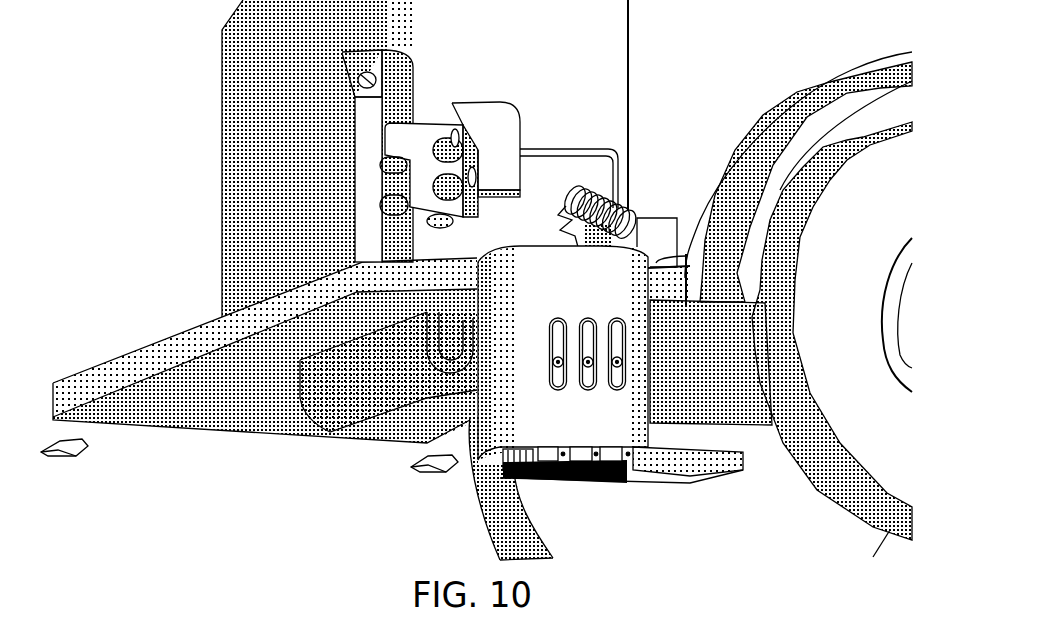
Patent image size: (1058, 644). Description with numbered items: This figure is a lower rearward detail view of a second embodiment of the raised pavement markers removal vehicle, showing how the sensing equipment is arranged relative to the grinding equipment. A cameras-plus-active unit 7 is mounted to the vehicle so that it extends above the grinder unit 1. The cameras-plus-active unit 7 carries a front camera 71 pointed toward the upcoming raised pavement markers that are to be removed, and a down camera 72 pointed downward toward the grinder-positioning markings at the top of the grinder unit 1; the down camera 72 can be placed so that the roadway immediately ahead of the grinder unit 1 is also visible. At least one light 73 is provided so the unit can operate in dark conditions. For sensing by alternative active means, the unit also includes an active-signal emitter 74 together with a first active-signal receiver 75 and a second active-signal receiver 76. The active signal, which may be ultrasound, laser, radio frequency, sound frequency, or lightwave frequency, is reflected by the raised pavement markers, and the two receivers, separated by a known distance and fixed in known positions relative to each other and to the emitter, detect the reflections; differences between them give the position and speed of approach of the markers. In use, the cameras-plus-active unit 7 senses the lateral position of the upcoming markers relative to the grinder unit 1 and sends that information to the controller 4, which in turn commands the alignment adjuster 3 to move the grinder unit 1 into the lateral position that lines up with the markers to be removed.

The grinder unit 1 is at (445, 485).
The alignment adjuster 3 is at (330, 417).
The controller 4 is at (655, 220).
The cameras-plus-active unit 7 is at (454, 133).
The front camera 71 is at (468, 195).
The down camera 72 is at (508, 195).
The light 73 is at (441, 224).
The active-signal emitter 74 is at (386, 166).
The first active-signal receiver 75 is at (350, 85).
The second active-signal receiver 76 is at (446, 115).